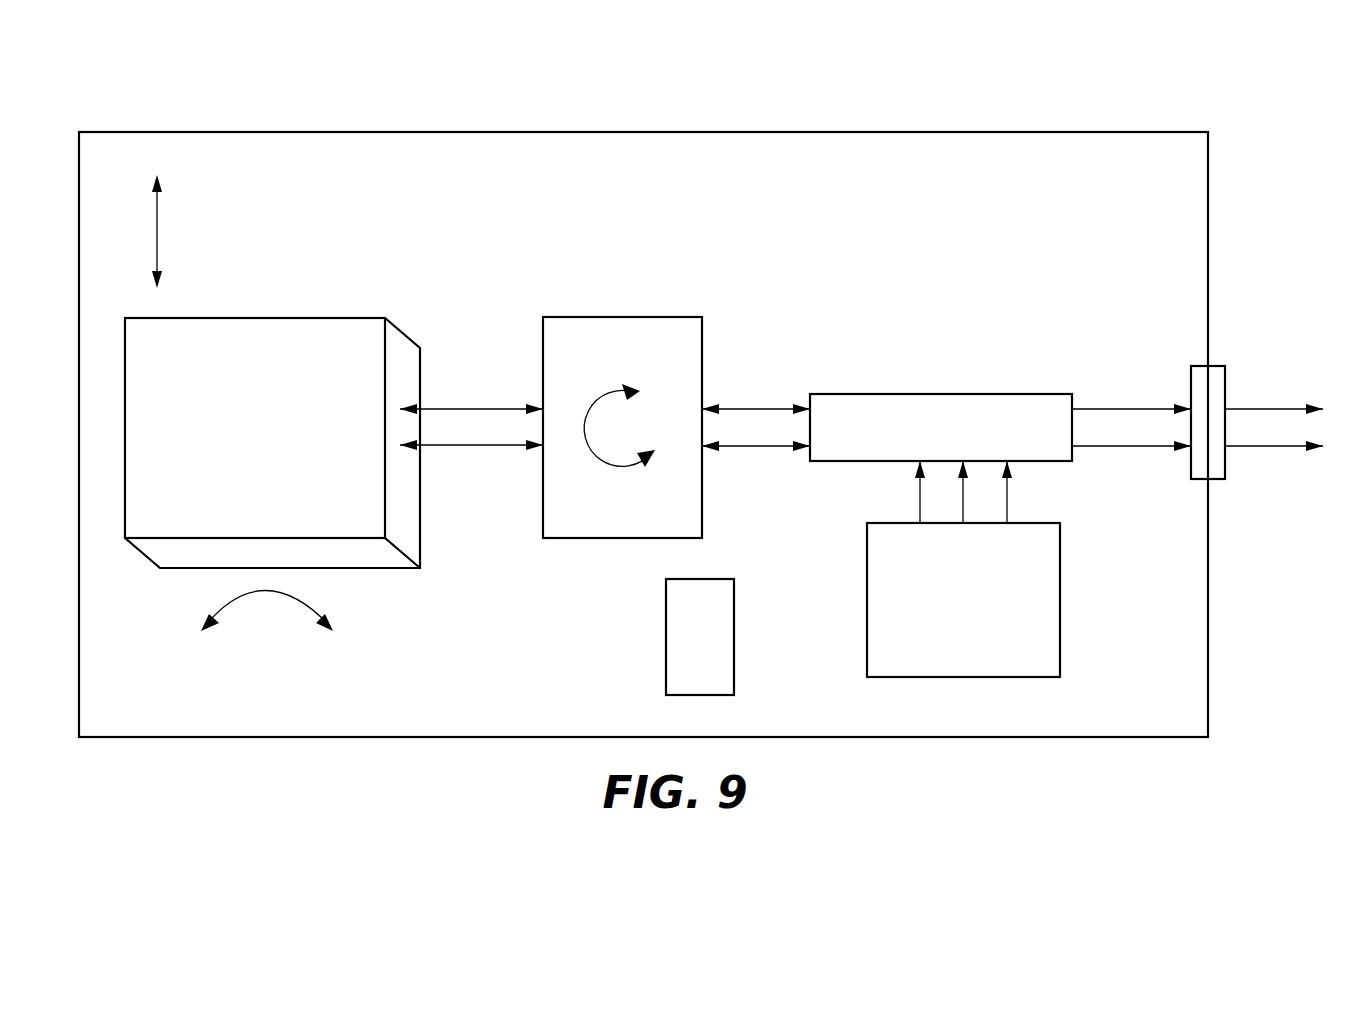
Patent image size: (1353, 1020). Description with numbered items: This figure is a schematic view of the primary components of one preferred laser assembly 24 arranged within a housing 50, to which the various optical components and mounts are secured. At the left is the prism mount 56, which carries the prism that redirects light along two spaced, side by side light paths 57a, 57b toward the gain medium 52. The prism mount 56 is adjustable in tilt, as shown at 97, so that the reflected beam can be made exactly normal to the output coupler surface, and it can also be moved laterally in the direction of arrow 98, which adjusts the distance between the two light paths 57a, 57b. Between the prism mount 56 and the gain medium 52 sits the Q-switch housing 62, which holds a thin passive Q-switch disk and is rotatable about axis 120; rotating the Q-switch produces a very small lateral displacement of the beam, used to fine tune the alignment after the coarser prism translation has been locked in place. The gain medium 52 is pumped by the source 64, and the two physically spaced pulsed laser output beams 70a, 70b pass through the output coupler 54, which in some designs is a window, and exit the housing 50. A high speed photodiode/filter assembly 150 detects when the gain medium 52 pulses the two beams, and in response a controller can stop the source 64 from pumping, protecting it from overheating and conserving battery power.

The laser assembly 24 is at (236, 98).
The housing 50 is at (1022, 180).
The arrow 98 is at (158, 238).
The prism mount 56 is at (238, 436).
The tilt adjustment 97 is at (263, 594).
The light path 57a is at (474, 405).
The light path 57b is at (467, 449).
The Q-switch housing 62 is at (562, 356).
The axis 120 is at (594, 458).
The gain medium 52 is at (887, 436).
The source 64 is at (947, 610).
The photodiode/filter assembly 150 is at (679, 651).
The output coupler 54 is at (1189, 380).
The pulsed laser output beam 70a is at (1267, 449).
The pulsed laser output beam 70b is at (1261, 407).